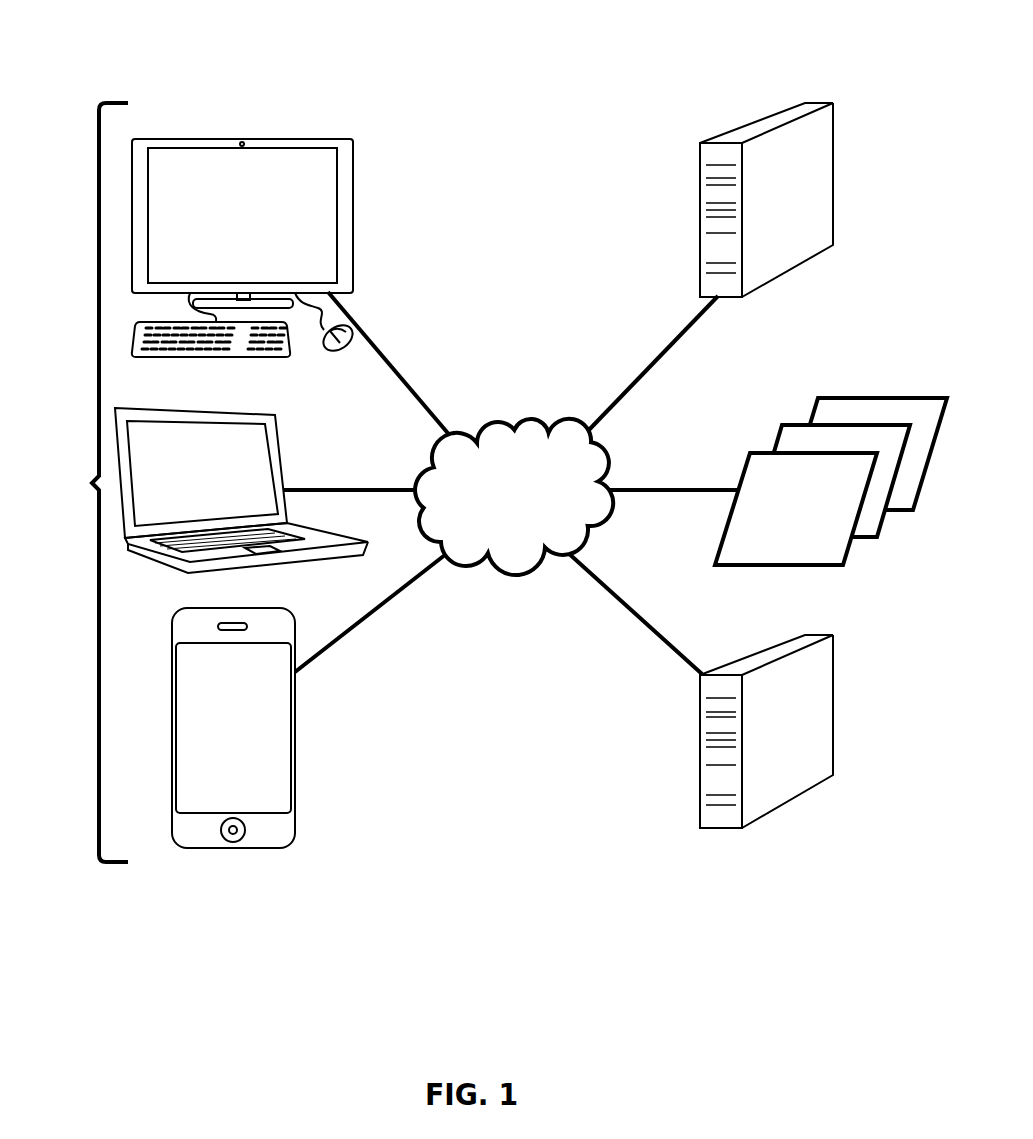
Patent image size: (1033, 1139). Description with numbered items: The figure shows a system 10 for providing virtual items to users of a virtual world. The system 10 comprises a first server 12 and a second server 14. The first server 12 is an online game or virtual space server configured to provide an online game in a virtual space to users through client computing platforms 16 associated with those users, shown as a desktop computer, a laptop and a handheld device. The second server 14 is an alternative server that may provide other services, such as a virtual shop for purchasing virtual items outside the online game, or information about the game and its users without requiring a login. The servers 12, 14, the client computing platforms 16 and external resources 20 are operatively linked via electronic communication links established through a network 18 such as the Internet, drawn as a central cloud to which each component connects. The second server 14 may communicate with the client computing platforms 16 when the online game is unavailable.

The system 10 is at (420, 73).
The first server 12 is at (767, 118).
The second server 14 is at (835, 727).
The client computing platforms 16 is at (92, 483).
The network 18 is at (524, 504).
The external resources 20 is at (809, 516).